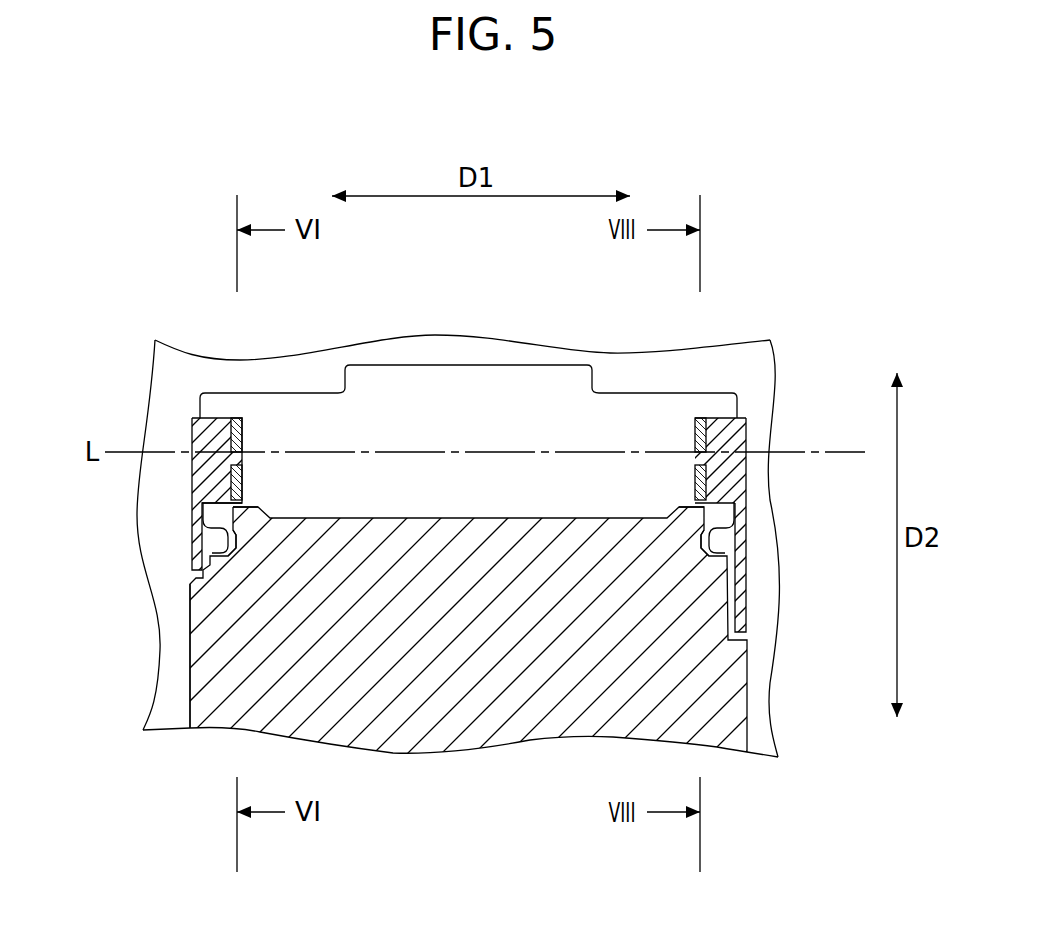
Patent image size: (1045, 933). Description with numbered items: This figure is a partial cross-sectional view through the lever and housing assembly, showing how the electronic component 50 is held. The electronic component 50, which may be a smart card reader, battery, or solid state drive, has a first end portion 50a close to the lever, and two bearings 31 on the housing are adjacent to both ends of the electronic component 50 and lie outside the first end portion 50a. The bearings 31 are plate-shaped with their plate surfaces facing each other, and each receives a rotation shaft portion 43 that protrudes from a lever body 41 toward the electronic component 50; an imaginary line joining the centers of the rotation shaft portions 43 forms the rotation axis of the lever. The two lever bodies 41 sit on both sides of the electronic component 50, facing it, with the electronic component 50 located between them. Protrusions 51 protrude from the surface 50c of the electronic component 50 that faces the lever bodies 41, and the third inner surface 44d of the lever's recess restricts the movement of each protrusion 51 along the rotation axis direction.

The bearing 31 is at (240, 497).
The lever body 41 is at (203, 471).
The rotation shaft portion 43 is at (238, 452).
The third inner surface 44d is at (206, 533).
The electronic component 50 is at (267, 674).
The first end portion 50a is at (267, 613).
The surface 50c is at (220, 551).
The protrusion 51 is at (228, 522).